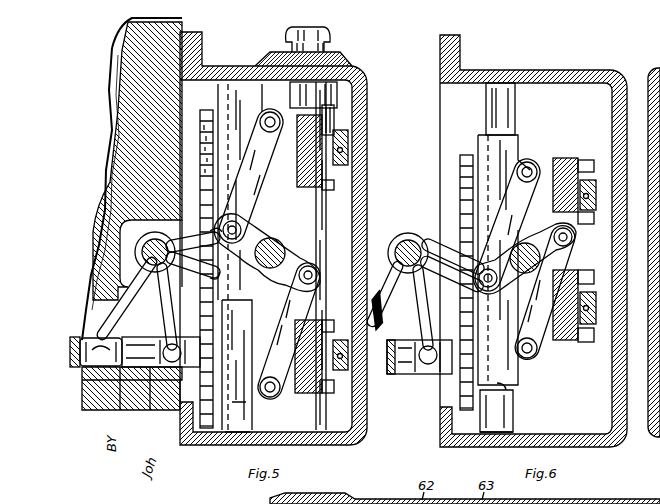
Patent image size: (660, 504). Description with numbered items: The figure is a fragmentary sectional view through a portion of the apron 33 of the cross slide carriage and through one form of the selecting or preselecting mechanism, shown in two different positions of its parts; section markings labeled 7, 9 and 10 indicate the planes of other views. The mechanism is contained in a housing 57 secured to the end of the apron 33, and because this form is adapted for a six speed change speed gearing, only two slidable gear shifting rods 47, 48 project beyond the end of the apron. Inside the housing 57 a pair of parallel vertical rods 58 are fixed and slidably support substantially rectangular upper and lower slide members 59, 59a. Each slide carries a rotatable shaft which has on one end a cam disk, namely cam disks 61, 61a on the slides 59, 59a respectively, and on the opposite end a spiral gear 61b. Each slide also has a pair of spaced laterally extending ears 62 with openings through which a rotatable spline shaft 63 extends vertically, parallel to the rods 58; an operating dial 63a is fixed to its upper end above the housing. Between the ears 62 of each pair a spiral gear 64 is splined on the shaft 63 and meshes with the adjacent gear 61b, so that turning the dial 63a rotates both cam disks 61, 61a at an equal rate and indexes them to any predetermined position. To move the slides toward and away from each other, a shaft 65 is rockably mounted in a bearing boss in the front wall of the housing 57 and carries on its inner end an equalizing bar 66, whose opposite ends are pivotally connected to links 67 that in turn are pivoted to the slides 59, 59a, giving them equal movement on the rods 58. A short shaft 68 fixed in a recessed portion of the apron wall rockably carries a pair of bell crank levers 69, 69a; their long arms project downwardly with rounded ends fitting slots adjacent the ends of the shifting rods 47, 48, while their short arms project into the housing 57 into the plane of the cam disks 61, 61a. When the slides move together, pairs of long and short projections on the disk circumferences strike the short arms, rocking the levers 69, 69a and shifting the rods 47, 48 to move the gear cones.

In FIG. 5, the apron 33 is at (140, 48).
In FIG. 5, the housing 57 is at (360, 206).
In FIG. 6, the housing 57 is at (585, 70).
In FIG. 6, the vertical rods 58 is at (515, 107).
In FIG. 5, the upper slide member 59 is at (242, 84).
In FIG. 6, the upper slide member 59 is at (475, 146).
In FIG. 5, the lower slide member 59a is at (238, 420).
In FIG. 6, the lower slide member 59a is at (512, 392).
In FIG. 5, the cam disk 61 is at (203, 136).
In FIG. 6, the cam disk 61 is at (460, 170).
In FIG. 5, the cam disk 61a is at (203, 408).
In FIG. 6, the cam disk 61a is at (466, 388).
In FIG. 5, the spiral gear 61b is at (348, 147).
In FIG. 5, the ears 62 is at (345, 134).
In FIG. 6, the ears 62 is at (596, 276).
In FIG. 5, the spline shaft 63 is at (330, 224).
In FIG. 5, the operating dial 63a is at (340, 58).
In FIG. 5, the spiral gear 64 is at (350, 158).
In FIG. 6, the spiral gear 64 is at (598, 312).
In FIG. 5, the shaft 65 is at (230, 236).
In FIG. 6, the shaft 65 is at (560, 270).
In FIG. 5, the equalizing bar 66 is at (265, 228).
In FIG. 6, the equalizing bar 66 is at (524, 258).
In FIG. 5, the links 67 is at (258, 176).
In FIG. 6, the links 67 is at (525, 259).
In FIG. 5, the short shaft 68 is at (135, 232).
In FIG. 5, the bell crank lever 69 is at (108, 328).
In FIG. 6, the bell crank lever 69 is at (386, 318).
In FIG. 5, the bell crank lever 69a is at (165, 320).
In FIG. 6, the bell crank lever 69a is at (411, 314).
In FIG. 5, the shifting rod 47 is at (100, 368).
In FIG. 5, the shifting rod 48 is at (140, 372).
In FIG. 6, the shifting rod 48 is at (410, 378).
In FIG. 5, the section line 7- 7 is at (202, 32).
In FIG. 5, the section line 9- 9 is at (62, 263).
In FIG. 5, the section line 10- 10 is at (347, 35).